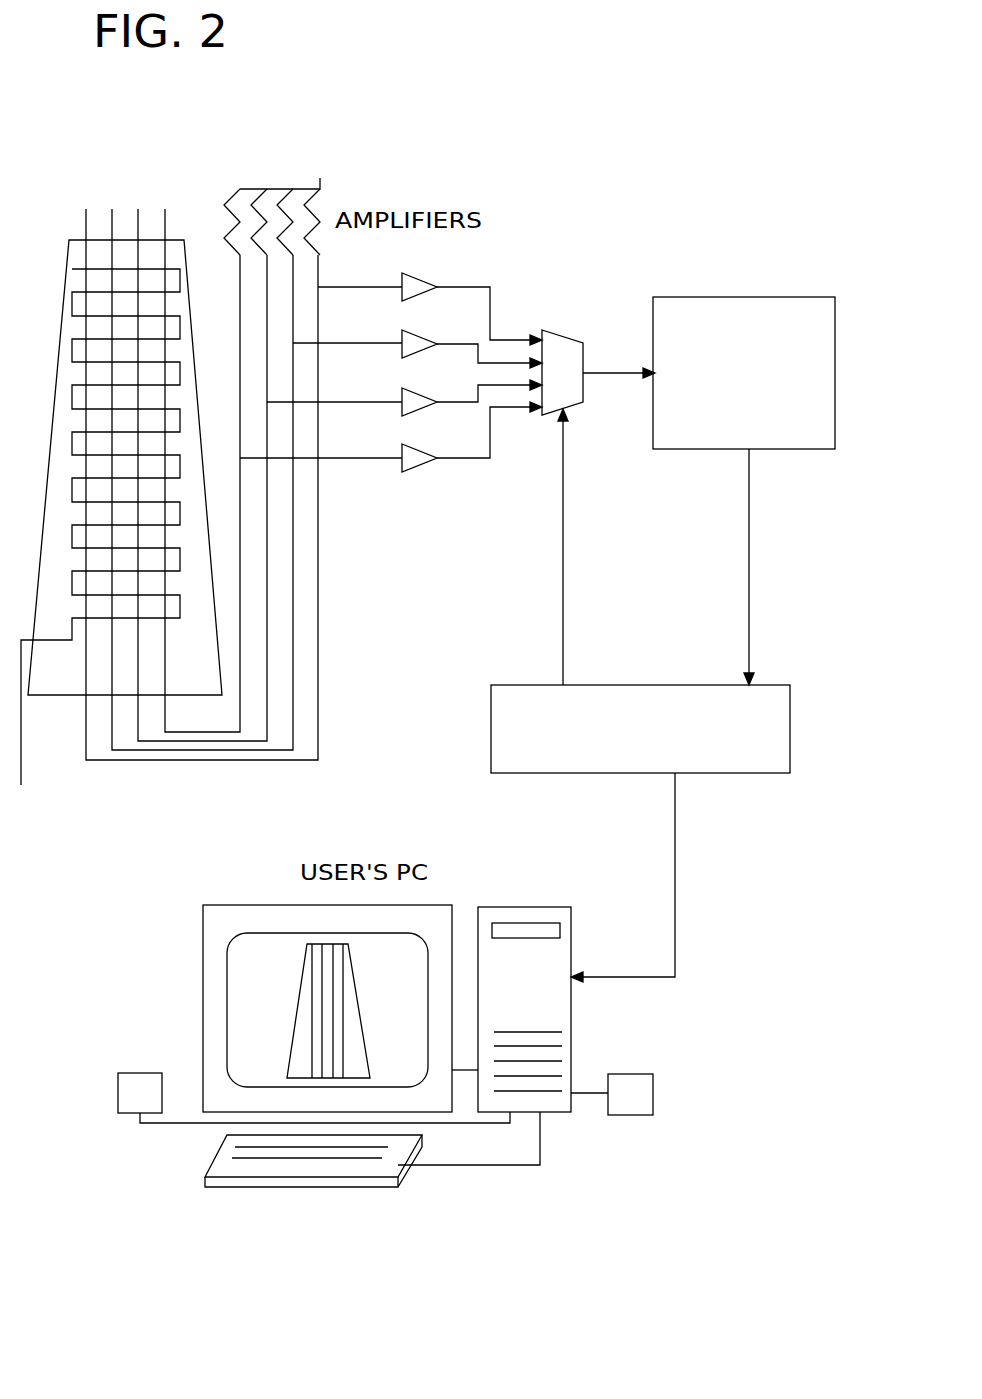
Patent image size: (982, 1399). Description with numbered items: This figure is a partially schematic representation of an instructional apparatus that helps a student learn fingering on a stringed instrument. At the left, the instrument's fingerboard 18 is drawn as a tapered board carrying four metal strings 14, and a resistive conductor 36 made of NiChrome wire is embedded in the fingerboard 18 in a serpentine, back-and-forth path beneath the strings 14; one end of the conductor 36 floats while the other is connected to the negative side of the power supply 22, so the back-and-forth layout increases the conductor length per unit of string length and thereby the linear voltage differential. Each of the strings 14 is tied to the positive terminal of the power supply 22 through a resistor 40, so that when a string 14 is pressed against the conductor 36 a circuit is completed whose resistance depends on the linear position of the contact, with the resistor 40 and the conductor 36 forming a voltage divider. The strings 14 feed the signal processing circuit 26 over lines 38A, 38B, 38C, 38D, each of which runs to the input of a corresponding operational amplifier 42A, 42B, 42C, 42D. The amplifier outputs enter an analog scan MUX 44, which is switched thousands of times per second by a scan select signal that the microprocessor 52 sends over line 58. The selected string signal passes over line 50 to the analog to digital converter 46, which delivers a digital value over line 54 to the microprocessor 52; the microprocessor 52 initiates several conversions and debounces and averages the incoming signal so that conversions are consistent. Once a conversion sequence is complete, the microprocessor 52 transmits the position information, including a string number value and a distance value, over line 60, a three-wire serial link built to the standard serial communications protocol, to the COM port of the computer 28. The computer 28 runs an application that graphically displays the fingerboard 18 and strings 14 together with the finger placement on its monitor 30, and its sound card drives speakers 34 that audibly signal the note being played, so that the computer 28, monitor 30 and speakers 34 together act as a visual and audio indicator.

The strings 14 is at (170, 206).
The fingerboard 18 is at (63, 278).
The power supply 22 is at (470, 172).
The signal processing circuit 26 is at (445, 605).
The computer 28 is at (517, 907).
The monitor 30 is at (203, 1002).
The speakers 34 is at (118, 1093).
The resistive conductor 36 is at (72, 440).
The line 38A is at (377, 286).
The line 38B is at (372, 343).
The line 38C is at (378, 375).
The line 38D is at (378, 430).
The resistor 40 is at (212, 218).
The operational amplifier 42A is at (422, 276).
The operational amplifier 42B is at (423, 332).
The operational amplifier 42C is at (409, 390).
The operational amplifier 42D is at (418, 448).
The scan MUX 44 is at (586, 360).
The analog to digital converter 46 is at (765, 297).
The line 50 is at (615, 374).
The microprocessor 52 is at (647, 685).
The line 54 is at (749, 632).
The line 58 is at (563, 575).
The line 60 is at (675, 902).